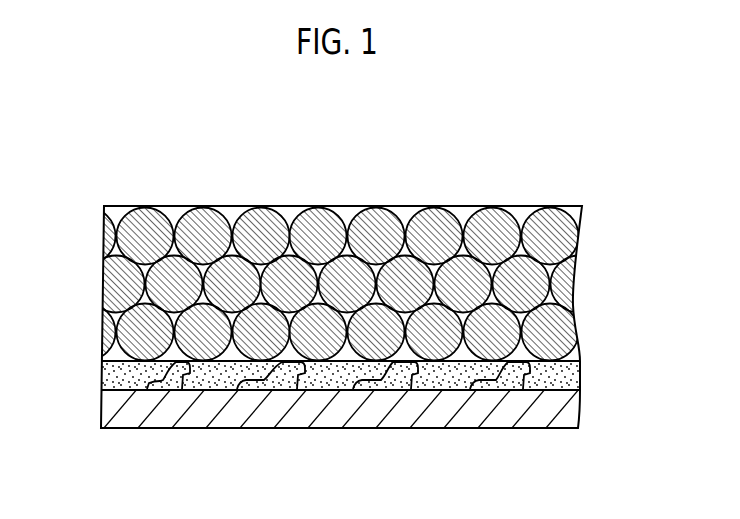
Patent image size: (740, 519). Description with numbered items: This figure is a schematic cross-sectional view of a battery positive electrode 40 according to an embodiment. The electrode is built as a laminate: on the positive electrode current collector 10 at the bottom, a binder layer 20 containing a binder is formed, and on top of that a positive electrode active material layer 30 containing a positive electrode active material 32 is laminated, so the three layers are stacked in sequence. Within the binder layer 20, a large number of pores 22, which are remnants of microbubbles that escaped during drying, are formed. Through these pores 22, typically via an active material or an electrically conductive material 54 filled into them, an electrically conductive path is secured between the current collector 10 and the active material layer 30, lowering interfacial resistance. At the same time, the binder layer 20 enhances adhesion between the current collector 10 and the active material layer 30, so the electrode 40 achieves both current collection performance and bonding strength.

The battery positive electrode 40 is at (95, 188).
The positive electrode active material layer 30 is at (580, 247).
The positive electrode active material 32 is at (316, 218).
The binder layer 20 is at (563, 378).
The pores 22 is at (172, 390).
The electrically conductive material 54 is at (126, 381).
The positive electrode current collector 10 is at (549, 415).